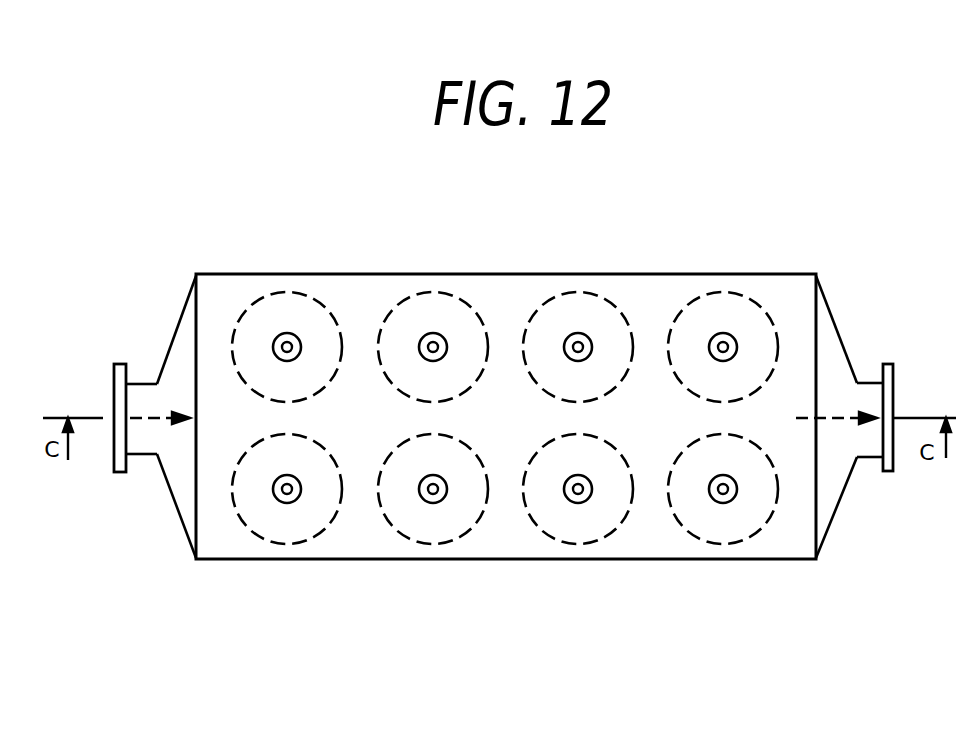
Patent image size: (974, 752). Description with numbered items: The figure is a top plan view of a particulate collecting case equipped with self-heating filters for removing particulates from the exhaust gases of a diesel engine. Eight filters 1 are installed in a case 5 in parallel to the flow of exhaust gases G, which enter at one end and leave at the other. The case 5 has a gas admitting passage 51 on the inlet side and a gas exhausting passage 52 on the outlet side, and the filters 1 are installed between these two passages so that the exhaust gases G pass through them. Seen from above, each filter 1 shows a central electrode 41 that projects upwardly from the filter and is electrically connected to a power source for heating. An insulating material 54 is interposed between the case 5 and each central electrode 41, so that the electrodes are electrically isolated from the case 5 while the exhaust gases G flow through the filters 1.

The filter 1 is at (608, 297).
The case 5 is at (393, 273).
The central electrode 41 is at (578, 347).
The gas admitting passage 51 is at (110, 453).
The gas exhausting passage 52 is at (867, 392).
The insulating material 54 is at (433, 333).
The exhaust gases G is at (157, 417).